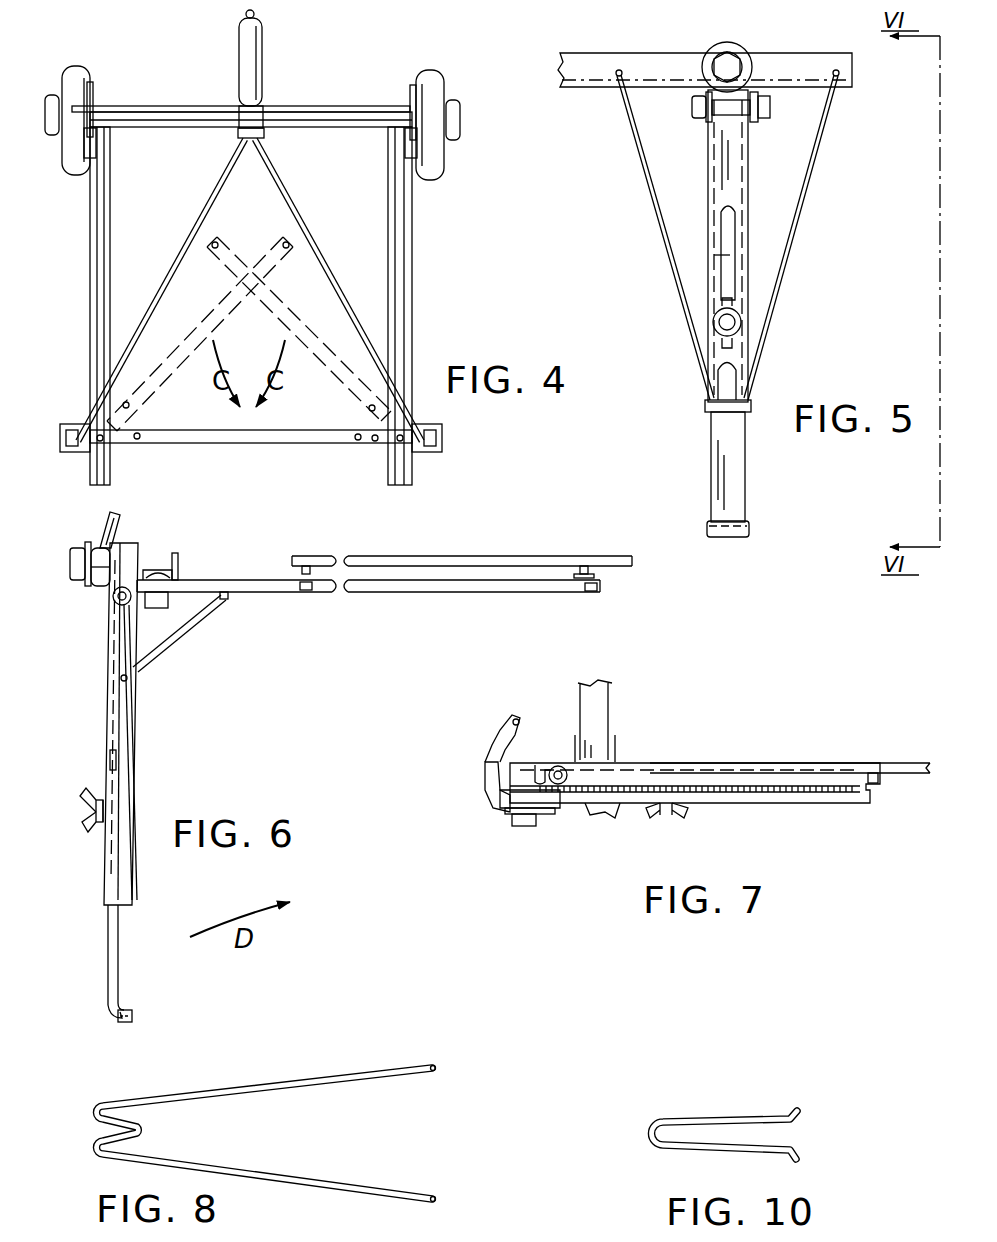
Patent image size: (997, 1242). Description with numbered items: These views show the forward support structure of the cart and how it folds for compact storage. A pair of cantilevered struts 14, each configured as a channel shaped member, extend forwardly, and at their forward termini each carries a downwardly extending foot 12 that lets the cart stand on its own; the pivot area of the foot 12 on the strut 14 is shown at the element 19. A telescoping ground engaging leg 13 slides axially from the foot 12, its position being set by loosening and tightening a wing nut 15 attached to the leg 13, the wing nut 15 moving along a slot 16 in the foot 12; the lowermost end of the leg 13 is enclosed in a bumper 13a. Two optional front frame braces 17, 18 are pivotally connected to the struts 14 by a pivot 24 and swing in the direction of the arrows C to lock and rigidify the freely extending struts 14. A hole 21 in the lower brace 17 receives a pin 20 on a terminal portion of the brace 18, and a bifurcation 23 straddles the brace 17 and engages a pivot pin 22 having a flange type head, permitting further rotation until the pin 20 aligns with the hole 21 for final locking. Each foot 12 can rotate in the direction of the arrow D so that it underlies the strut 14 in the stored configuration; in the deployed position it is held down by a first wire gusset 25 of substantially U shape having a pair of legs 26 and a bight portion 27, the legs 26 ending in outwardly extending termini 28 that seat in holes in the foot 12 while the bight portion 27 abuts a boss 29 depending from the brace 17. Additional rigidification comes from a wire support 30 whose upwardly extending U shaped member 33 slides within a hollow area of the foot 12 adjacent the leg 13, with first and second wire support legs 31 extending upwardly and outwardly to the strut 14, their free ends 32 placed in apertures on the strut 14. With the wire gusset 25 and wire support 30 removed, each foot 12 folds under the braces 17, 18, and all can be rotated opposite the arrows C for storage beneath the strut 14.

In FIG. 5, the foot 12 is at (740, 145).
In FIG. 6, the foot 12 is at (130, 888).
In FIG. 7, the foot 12 is at (805, 795).
In FIG. 5, the telescoping ground engaging leg 13 is at (736, 468).
In FIG. 6, the telescoping ground engaging leg 13 is at (120, 955).
In FIG. 5, the bumper 13a is at (742, 534).
In FIG. 6, the bumper 13a is at (126, 1024).
In FIG. 5, the strut 14 is at (582, 75).
In FIG. 6, the strut 14 is at (179, 560).
In FIG. 7, the strut 14 is at (615, 738).
In FIG. 5, the wing nut 15 is at (717, 308).
In FIG. 6, the wing nut 15 is at (85, 832).
In FIG. 7, the wing nut 15 is at (685, 818).
In FIG. 5, the slot 16 is at (727, 230).
In FIG. 4, the brace 17 is at (205, 325).
In FIG. 6, the brace 17 is at (490, 597).
In FIG. 7, the brace 17 is at (888, 768).
In FIG. 4, the brace 18 is at (283, 311).
In FIG. 6, the brace 18 is at (448, 560).
In FIG. 5, the pivot bolt 19 is at (696, 108).
In FIG. 6, the pivot bolt 19 is at (114, 601).
In FIG. 6, the pin 20 is at (300, 570).
In FIG. 6, the hole 21 is at (305, 596).
In FIG. 6, the pivot pin 22 is at (594, 576).
In FIG. 6, the bifurcation 23 is at (590, 596).
In FIG. 6, the pivot 24 is at (162, 572).
In FIG. 6, the first wire gusset 25 is at (172, 643).
In FIG. 10, the first wire gusset 25 is at (721, 1108).
In FIG. 10, the legs 26 is at (708, 1116).
In FIG. 10, the bight portion 27 is at (655, 1136).
In FIG. 10, the termini 28 is at (800, 1110).
In FIG. 6, the boss 29 is at (226, 601).
In FIG. 5, the wire support 30 is at (804, 203).
In FIG. 6, the wire support 30 is at (140, 727).
In FIG. 7, the wire support 30 is at (706, 775).
In FIG. 8, the wire support 30 is at (288, 1113).
In FIG. 8, the wire support legs 31 is at (318, 1082).
In FIG. 6, the free ends 32 is at (152, 574).
In FIG. 8, the free ends 32 is at (437, 1064).
In FIG. 8, the U shaped member 33 is at (142, 1130).